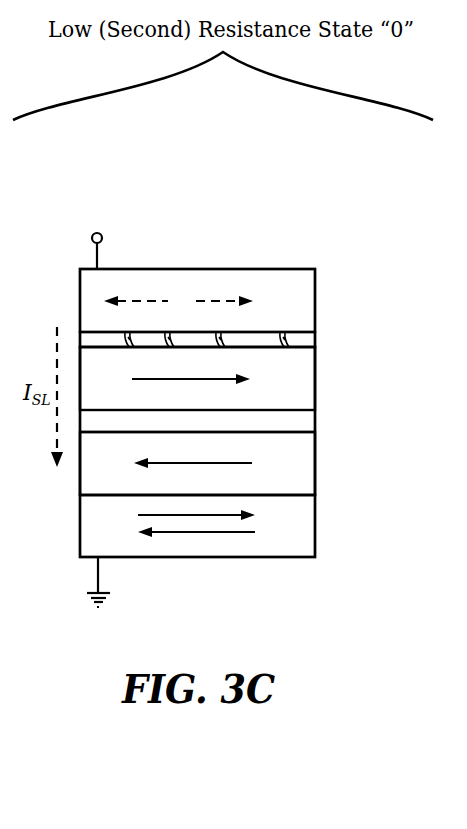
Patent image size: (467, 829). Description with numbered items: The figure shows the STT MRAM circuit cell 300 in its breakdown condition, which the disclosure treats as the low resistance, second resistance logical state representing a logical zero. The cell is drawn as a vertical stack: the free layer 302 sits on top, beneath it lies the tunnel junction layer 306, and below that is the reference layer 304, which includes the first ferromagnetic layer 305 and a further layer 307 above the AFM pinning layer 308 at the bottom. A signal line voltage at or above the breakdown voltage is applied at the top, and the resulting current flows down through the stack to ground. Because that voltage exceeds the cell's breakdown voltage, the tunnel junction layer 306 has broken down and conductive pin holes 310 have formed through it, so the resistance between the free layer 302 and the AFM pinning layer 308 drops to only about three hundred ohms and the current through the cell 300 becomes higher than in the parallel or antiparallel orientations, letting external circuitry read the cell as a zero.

The STT MRAM circuit cell 300 is at (347, 217).
The free layer 302 is at (307, 299).
The reference layer 304 is at (323, 350).
The first ferromagnetic layer 305 is at (305, 379).
The tunnel junction layer 306 is at (315, 340).
The pinned layer 307 is at (305, 462).
The AFM pinning layer 308 is at (305, 524).
The conductive pin holes 310 is at (125, 336).